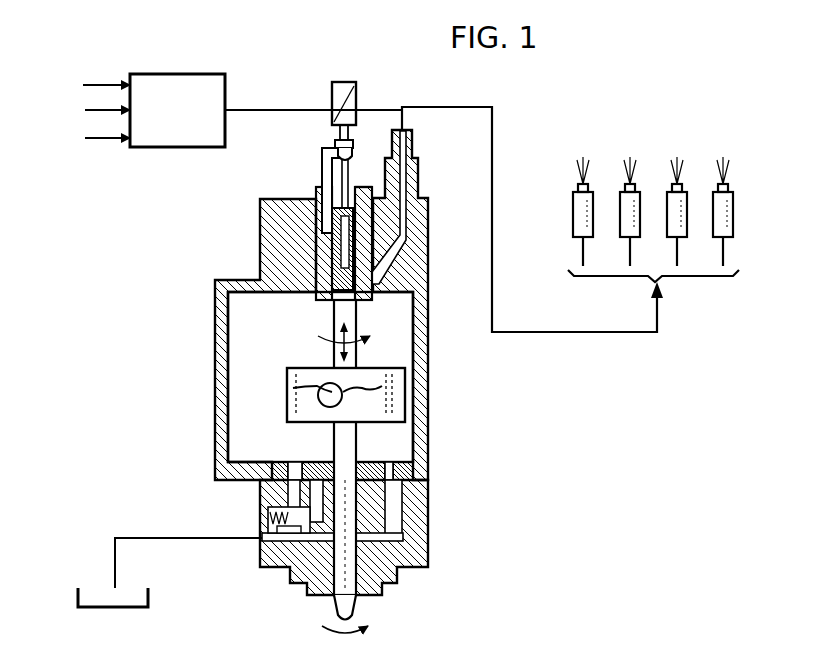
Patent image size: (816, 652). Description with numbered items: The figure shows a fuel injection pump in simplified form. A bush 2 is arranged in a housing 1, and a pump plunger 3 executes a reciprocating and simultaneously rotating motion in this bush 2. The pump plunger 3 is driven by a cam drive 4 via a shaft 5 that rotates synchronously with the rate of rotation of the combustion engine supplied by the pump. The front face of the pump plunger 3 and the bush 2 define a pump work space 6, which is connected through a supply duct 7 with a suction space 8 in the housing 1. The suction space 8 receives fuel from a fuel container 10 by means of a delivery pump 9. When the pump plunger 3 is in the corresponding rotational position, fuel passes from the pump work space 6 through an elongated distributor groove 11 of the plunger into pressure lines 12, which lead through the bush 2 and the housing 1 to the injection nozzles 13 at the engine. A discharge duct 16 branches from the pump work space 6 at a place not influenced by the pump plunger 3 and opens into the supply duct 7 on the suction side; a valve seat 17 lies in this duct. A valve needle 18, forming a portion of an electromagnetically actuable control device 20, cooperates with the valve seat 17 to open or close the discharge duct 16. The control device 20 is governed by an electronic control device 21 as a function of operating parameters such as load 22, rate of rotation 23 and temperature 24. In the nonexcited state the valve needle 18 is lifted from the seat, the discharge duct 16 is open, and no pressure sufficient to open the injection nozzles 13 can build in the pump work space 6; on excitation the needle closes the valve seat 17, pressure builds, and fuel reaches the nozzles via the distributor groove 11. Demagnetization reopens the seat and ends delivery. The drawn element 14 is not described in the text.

The housing 1 is at (262, 210).
The bush 2 is at (324, 266).
The pump plunger 3 is at (343, 310).
The cam drive 4 is at (307, 400).
The shaft 5 is at (338, 440).
The pump work space 6 is at (356, 196).
The supply duct 7 is at (312, 292).
The suction space 8 is at (240, 348).
The delivery pump 9 is at (413, 472).
The fuel container 10 is at (150, 597).
The distributor groove 11 is at (365, 288).
The pressure lines 12 is at (590, 333).
The injection nozzles 13 is at (726, 214).
The control rod 14 is at (288, 220).
The discharge duct 16 is at (322, 153).
The valve seat 17 is at (352, 158).
The valve needle 18 is at (340, 134).
The control device 20 is at (340, 83).
The electronic control device 21 is at (186, 88).
The load 22 is at (105, 68).
The rate of rotation 23 is at (100, 110).
The temperature 24 is at (104, 142).